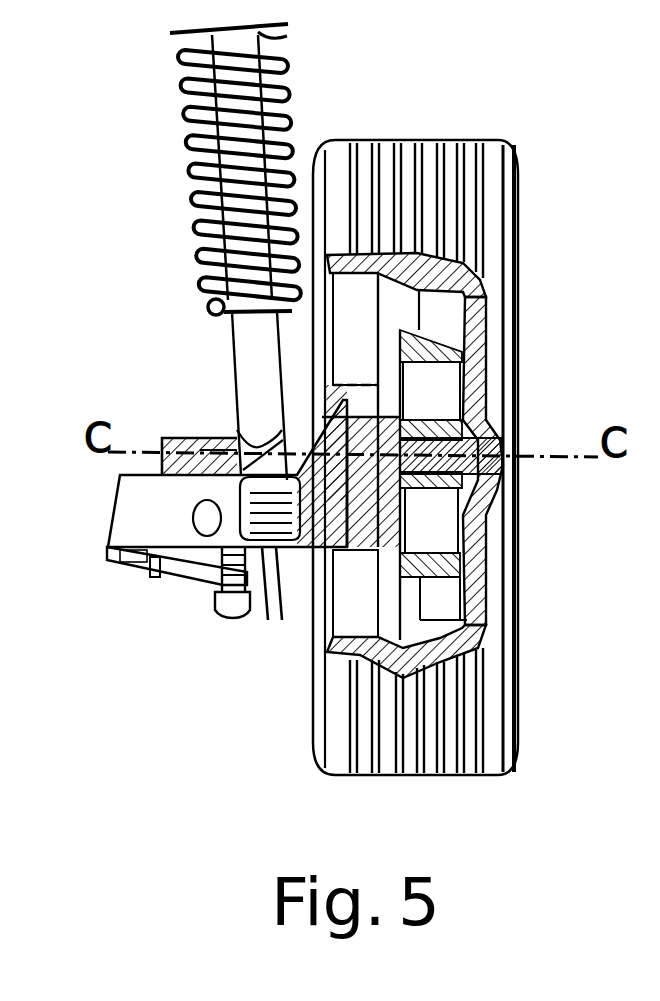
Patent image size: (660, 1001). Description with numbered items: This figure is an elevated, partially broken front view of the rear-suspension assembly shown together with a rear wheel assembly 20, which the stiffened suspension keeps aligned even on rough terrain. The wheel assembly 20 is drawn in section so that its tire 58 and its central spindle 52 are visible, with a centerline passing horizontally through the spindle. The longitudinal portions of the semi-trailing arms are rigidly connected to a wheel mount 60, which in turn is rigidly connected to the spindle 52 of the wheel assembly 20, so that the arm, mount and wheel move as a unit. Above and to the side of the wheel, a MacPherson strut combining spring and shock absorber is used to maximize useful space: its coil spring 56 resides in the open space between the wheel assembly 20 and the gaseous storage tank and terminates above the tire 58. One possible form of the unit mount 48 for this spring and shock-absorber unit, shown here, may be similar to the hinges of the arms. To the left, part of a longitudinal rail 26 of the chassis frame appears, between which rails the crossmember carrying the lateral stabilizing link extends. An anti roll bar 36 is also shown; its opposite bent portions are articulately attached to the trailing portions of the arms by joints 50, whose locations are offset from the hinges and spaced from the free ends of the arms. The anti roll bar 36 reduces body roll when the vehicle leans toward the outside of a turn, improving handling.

The wheel assembly 20 is at (455, 442).
The longitudinal rail 26 is at (225, 454).
The anti roll bar 36 is at (142, 596).
The unit mount 48 is at (247, 616).
The joint 50 is at (189, 623).
The spindle 52 is at (524, 491).
The coil spring 56 is at (168, 252).
The tire 58 is at (411, 413).
The wheel mount 60 is at (488, 465).